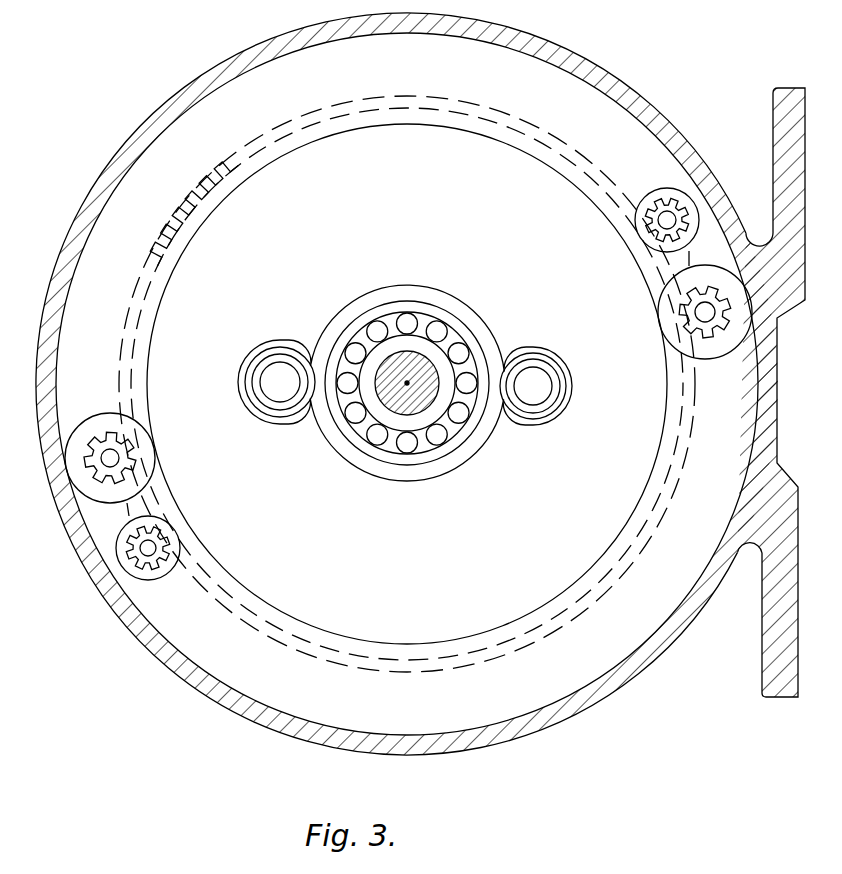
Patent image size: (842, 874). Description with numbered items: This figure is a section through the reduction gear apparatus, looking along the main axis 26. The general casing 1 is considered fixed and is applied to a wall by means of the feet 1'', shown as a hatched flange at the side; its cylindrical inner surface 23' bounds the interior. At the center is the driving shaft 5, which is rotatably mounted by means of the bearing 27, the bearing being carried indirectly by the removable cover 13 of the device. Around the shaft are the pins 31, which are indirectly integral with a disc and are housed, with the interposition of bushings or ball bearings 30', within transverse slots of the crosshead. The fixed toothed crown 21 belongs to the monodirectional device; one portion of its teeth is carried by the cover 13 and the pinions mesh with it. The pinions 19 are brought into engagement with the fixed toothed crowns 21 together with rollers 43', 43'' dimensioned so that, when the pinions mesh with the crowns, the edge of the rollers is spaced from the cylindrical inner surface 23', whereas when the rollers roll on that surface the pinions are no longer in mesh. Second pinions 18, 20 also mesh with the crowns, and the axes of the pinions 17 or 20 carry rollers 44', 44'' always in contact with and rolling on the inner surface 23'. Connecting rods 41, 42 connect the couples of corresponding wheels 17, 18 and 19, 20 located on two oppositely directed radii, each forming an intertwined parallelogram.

The casing 1 is at (407, 384).
The feet 1'' is at (766, 392).
The cylindrical inner surface 23' is at (391, 384).
The removable cover 13 is at (344, 148).
The fixed toothed crown 21 is at (213, 176).
The pinion 17 is at (656, 196).
The second pinion 18 is at (711, 340).
The pinion 19 is at (172, 581).
The second pinion 20 is at (102, 432).
The connecting rod 41 is at (125, 516).
The connecting rod 42 is at (691, 258).
The roller 43' is at (148, 567).
The roller 43'' is at (689, 199).
The roller 44' is at (106, 454).
The roller 44'' is at (707, 328).
The main axis 26 is at (390, 402).
The bearing 27 is at (438, 328).
The shaft 5 is at (417, 414).
The bushing or ball bearing 30' is at (408, 404).
The pin 31 is at (268, 373).